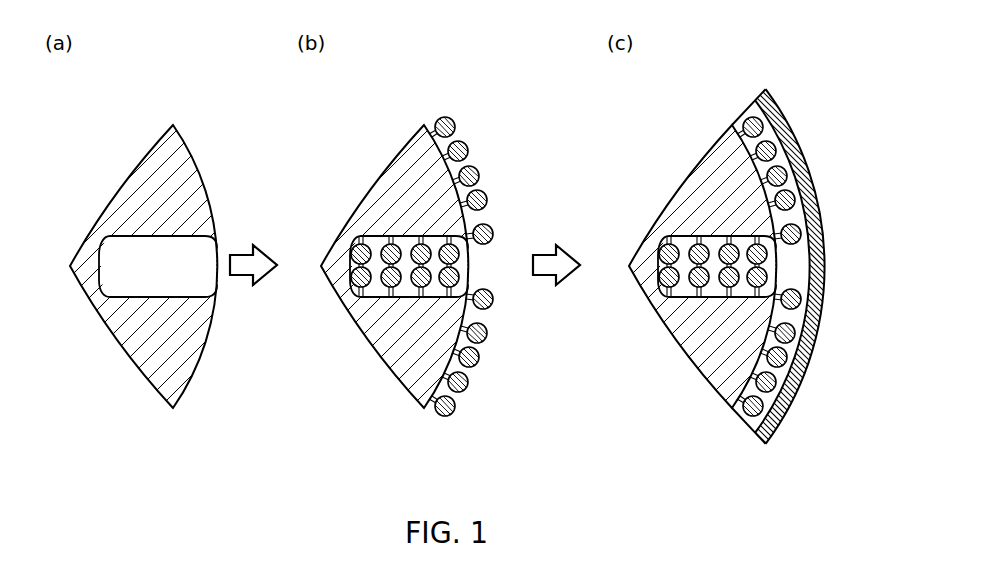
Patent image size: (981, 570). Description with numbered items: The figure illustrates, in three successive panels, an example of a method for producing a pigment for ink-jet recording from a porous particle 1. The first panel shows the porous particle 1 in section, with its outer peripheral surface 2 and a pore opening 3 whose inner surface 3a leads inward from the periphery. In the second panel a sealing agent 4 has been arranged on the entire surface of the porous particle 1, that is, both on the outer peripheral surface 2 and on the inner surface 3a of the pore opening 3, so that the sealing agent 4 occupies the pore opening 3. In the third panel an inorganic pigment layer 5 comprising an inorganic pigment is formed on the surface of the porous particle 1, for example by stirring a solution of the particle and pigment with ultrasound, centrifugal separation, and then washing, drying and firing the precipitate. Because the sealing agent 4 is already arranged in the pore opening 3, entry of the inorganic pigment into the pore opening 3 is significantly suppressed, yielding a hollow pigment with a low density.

The porous particle 1 is at (204, 97).
The outer peripheral surface 2 is at (182, 139).
The pore opening 3 is at (118, 268).
The inner surface 3a is at (115, 230).
The sealing agent 4 is at (490, 289).
The inorganic pigment layer 5 is at (794, 147).